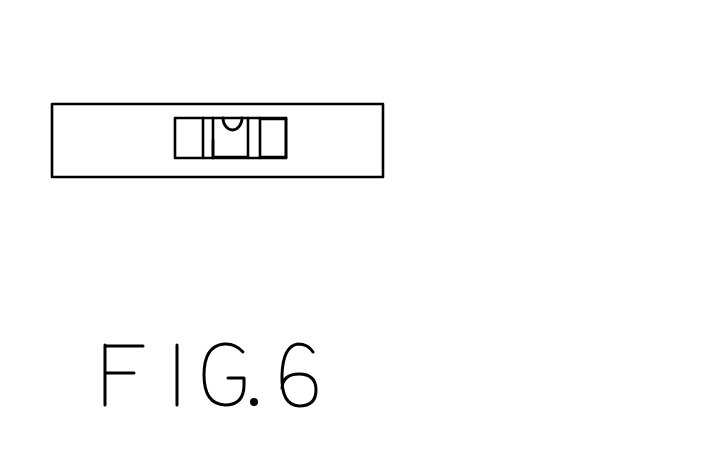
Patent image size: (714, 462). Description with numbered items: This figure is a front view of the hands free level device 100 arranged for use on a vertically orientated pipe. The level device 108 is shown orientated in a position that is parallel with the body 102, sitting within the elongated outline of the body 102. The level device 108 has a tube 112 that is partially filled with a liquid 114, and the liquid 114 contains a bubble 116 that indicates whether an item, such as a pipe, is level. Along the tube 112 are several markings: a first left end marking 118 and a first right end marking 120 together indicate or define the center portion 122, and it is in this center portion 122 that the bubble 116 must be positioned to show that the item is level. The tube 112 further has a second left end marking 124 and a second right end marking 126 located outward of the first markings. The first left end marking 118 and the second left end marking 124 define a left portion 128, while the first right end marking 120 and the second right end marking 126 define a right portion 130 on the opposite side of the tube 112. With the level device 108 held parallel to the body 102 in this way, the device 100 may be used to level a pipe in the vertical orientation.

The device 100 is at (377, 58).
The body 102 is at (372, 142).
The level device 108 is at (222, 193).
The tube 112 is at (287, 136).
The liquid 114 is at (272, 146).
The bubble 116 is at (232, 118).
The first left end marking 118 is at (213, 163).
The first right end marking 120 is at (248, 160).
The center portion 122 is at (233, 160).
The second left end marking 124 is at (204, 146).
The second right end marking 126 is at (273, 118).
The portion 128 is at (211, 118).
The portion 130 is at (258, 118).